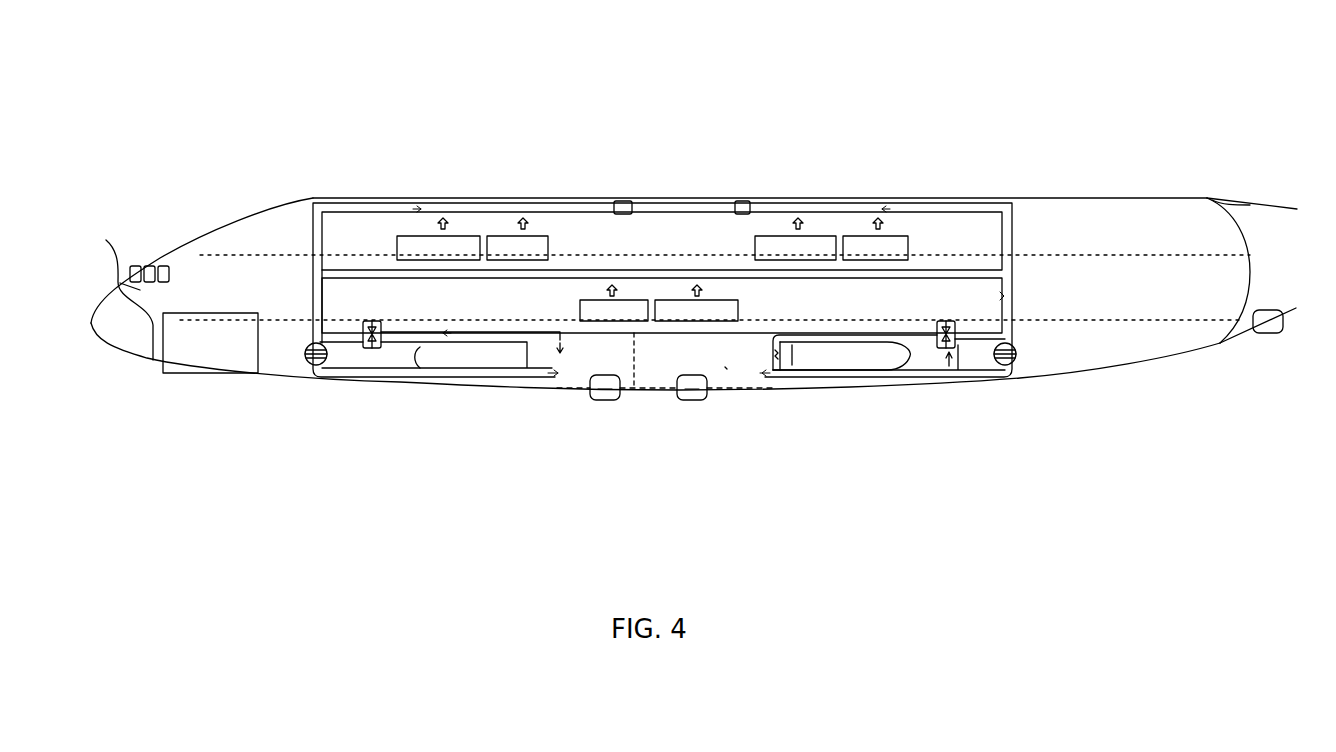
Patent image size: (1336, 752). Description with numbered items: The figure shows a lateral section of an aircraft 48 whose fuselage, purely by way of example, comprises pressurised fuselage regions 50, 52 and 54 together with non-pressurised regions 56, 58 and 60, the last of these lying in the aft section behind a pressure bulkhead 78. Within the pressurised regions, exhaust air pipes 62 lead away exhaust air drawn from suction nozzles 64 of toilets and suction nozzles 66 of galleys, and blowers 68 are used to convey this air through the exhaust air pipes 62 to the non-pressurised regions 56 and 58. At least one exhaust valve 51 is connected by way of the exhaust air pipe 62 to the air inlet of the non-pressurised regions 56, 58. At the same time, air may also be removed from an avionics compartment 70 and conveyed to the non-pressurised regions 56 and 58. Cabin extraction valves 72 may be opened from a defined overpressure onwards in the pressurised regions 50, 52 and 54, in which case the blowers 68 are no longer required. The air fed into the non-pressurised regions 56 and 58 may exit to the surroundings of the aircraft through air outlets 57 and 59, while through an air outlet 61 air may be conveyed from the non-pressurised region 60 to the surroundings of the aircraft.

The aircraft 48 is at (639, 108).
The pressurised fuselage region 50 is at (703, 228).
The exhaust valve 51 is at (632, 208).
The pressurised fuselage region 52 is at (566, 300).
The pressurised fuselage region 54 is at (106, 241).
The non-pressurised region 56 is at (574, 372).
The air outlet 57 is at (603, 400).
The non-pressurised region 58 is at (725, 367).
The air outlet 59 is at (690, 400).
The non-pressurised region 60 is at (1262, 250).
The air outlet 61 is at (1278, 333).
The exhaust air pipe 62 is at (393, 205).
The suction nozzle of toilet 64 is at (402, 245).
The suction nozzle of galley 66 is at (548, 242).
The blower 68 is at (370, 349).
The avionics compartment 70 is at (190, 347).
The cabin extraction valve 72 is at (308, 362).
The pressure bulkhead 78 is at (1226, 204).